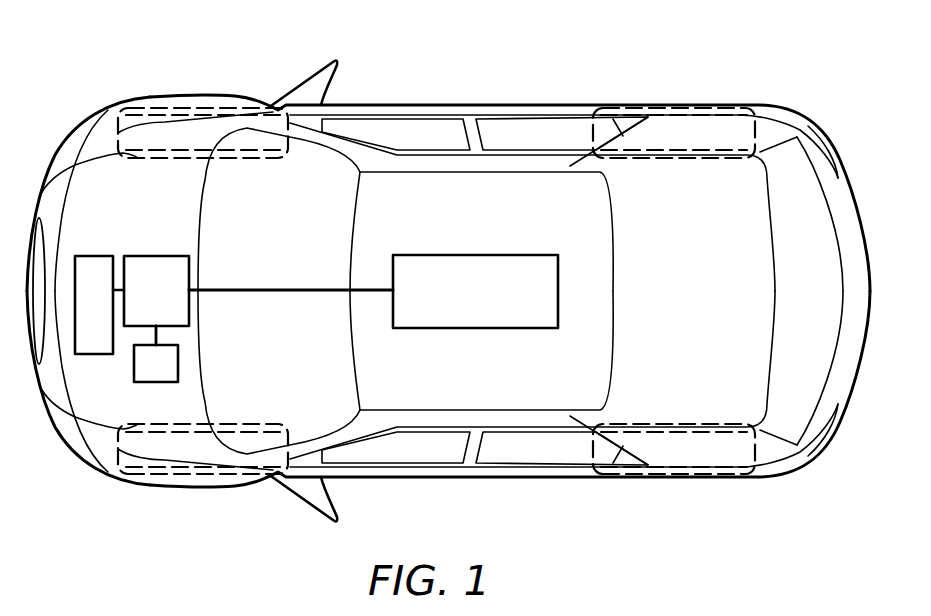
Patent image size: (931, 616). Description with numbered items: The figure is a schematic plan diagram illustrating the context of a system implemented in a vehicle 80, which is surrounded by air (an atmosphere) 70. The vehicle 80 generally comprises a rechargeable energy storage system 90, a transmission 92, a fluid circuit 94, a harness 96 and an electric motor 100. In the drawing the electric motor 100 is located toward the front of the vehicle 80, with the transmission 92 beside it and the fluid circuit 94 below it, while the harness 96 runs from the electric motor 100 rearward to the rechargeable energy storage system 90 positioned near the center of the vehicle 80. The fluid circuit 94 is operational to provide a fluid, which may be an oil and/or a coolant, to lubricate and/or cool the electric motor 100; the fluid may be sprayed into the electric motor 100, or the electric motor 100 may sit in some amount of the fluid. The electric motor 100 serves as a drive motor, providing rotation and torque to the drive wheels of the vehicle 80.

The air 70 is at (126, 68).
The vehicle 80 is at (262, 104).
The rechargeable energy storage system 90 is at (460, 306).
The transmission 92 is at (80, 322).
The fluid circuit 94 is at (170, 379).
The harness 96 is at (277, 293).
The electric motor 100 is at (137, 306).